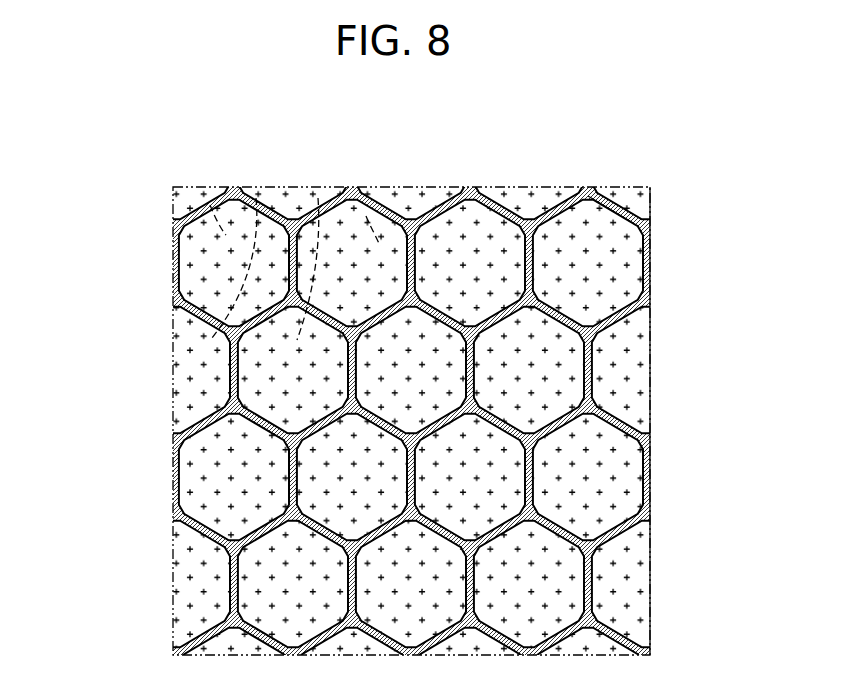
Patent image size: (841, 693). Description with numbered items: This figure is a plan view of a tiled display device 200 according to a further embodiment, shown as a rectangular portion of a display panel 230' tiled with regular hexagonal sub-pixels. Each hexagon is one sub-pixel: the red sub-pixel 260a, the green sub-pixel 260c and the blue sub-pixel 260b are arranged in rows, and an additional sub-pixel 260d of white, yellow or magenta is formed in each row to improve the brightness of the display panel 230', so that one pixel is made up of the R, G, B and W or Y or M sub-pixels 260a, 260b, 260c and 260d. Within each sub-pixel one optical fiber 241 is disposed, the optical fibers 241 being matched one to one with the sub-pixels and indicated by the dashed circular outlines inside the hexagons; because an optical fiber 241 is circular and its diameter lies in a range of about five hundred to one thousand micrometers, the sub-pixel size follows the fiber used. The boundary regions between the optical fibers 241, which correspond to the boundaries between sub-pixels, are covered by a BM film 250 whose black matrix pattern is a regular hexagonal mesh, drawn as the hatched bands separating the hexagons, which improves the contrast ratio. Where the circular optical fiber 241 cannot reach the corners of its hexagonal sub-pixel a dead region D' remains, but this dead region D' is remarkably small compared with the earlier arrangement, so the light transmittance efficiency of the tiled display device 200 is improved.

The tiled display device 200 is at (152, 184).
The display panel 230' is at (694, 421).
The optical fiber 241 is at (207, 265).
The BM film 250 is at (600, 339).
The R sub-pixel 260a is at (209, 189).
The B sub-pixel 260b is at (379, 192).
The G sub-pixel 260c is at (256, 198).
The W, Y or M sub-pixel 260d is at (318, 198).
The dead region D' is at (608, 168).